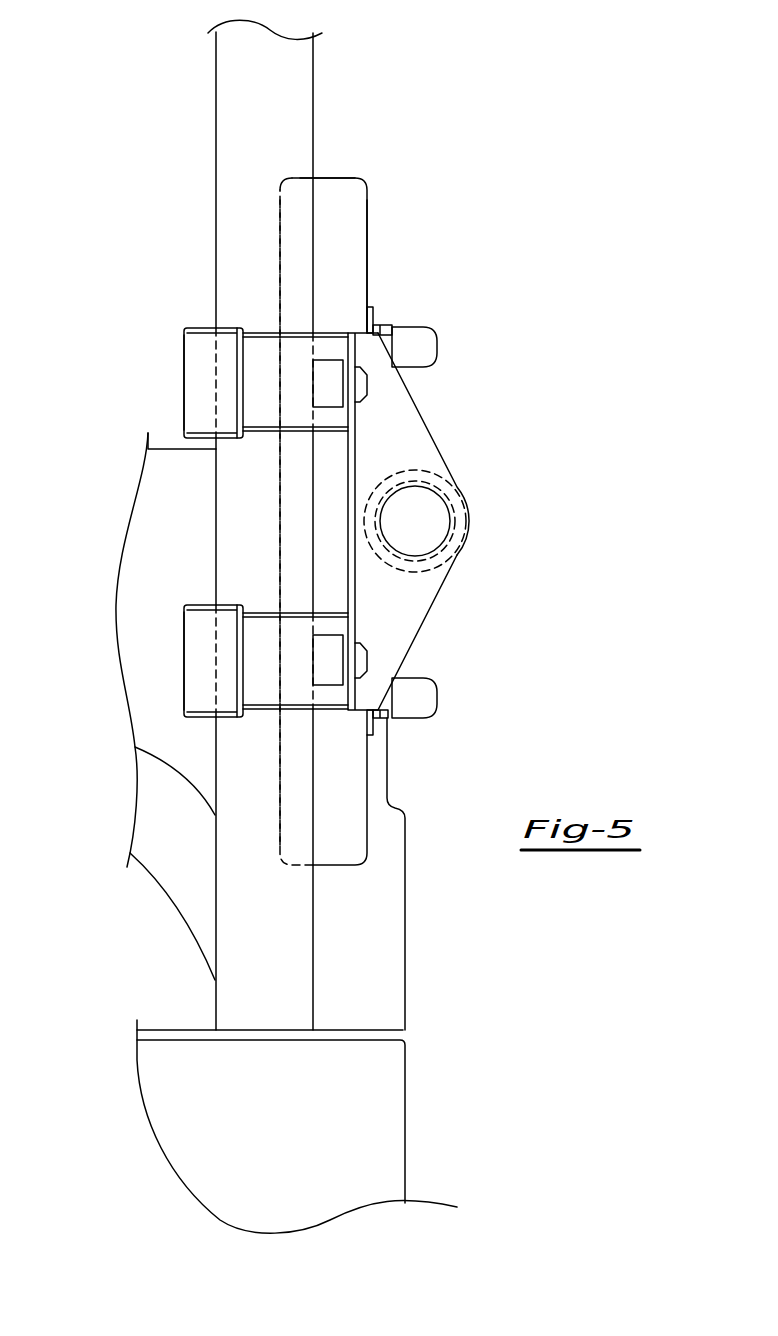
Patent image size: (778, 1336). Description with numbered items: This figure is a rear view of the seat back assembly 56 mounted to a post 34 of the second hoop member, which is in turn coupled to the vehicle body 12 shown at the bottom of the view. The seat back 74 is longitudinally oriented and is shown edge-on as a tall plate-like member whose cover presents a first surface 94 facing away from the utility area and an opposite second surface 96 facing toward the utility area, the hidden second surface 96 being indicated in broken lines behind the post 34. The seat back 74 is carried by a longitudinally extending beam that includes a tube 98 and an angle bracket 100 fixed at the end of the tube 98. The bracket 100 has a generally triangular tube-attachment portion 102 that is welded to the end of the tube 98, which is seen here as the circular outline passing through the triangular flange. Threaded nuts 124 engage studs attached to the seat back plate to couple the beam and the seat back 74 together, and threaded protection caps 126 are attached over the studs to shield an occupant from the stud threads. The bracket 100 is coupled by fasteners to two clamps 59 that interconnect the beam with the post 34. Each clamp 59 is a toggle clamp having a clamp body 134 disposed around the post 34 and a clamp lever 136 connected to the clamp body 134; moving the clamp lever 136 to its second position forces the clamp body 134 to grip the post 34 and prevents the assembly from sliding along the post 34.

The vehicle body 12 is at (393, 1122).
The post 34 is at (230, 60).
The seat back assembly 56 is at (324, 477).
The clamp 59 is at (146, 518).
The seat back 74 is at (357, 179).
The first surface 94 is at (368, 218).
The second surface 96 is at (280, 213).
The tube 98 is at (458, 495).
The angle bracket 100 is at (462, 521).
The tube-attachment portion 102 is at (417, 583).
The threaded nut 124 is at (385, 328).
The threaded protection cap 126 is at (437, 347).
The clamp body 134 is at (263, 333).
The clamp lever 136 is at (184, 363).